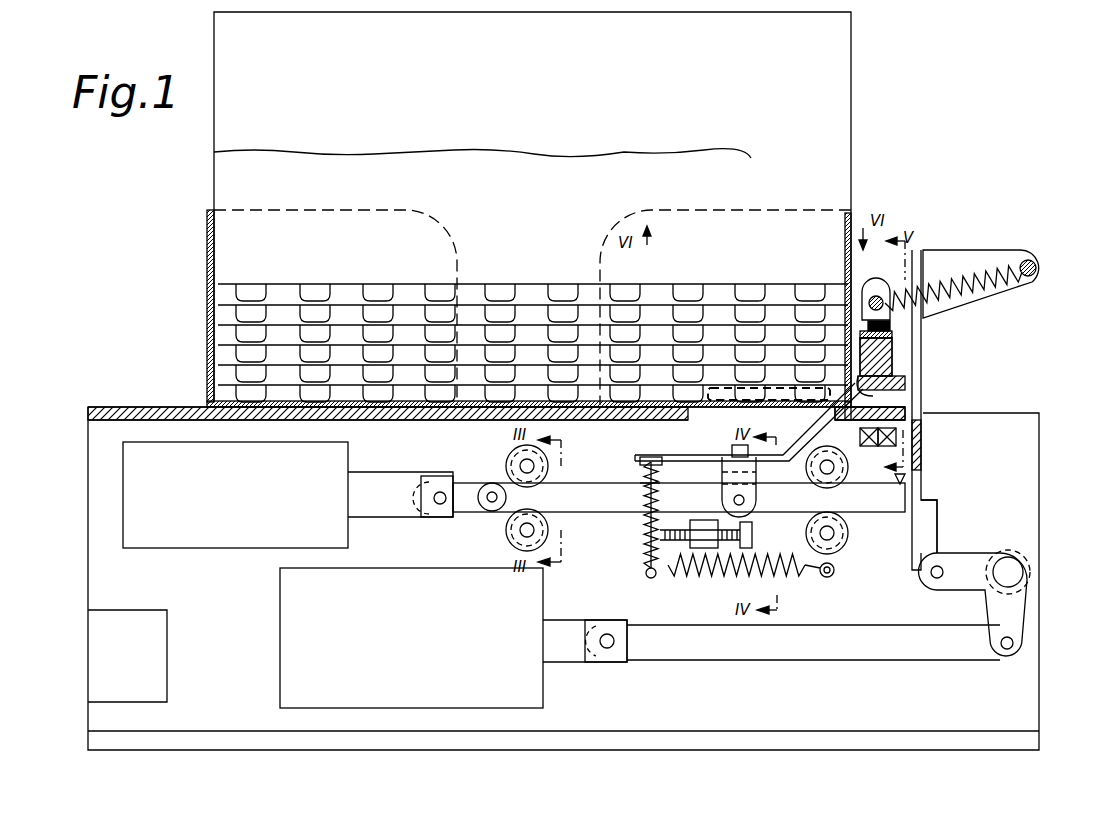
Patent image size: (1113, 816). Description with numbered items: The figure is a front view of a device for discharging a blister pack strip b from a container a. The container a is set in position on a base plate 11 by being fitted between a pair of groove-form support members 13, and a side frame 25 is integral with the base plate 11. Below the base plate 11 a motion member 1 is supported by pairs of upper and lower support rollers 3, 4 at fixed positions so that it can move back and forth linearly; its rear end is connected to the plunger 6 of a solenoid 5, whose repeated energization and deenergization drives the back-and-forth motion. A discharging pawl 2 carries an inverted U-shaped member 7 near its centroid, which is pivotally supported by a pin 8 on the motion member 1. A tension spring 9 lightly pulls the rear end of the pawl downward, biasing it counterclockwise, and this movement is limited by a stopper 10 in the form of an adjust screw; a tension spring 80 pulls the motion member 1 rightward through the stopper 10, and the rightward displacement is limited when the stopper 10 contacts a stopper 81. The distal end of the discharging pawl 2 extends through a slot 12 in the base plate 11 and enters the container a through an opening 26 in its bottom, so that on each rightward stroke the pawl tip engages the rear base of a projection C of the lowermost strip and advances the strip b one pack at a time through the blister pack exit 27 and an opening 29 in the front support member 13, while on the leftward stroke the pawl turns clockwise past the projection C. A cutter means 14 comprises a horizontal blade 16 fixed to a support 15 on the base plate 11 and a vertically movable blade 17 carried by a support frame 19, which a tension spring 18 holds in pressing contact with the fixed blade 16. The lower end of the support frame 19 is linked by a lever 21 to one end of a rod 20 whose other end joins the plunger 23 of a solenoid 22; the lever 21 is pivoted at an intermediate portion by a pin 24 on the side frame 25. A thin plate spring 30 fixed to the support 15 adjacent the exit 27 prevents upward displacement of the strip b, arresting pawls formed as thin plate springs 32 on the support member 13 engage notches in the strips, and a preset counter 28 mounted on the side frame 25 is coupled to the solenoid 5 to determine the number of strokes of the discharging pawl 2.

The container a is at (848, 146).
The blister pack strip b is at (470, 298).
The motion member 1 is at (586, 490).
The discharging pawl 2 is at (749, 437).
The upper and lower support rollers 3 is at (505, 472).
The upper and lower support rollers 4 is at (848, 472).
The solenoid 5 is at (239, 548).
The plunger 6 is at (380, 478).
The inverted U-shaped member 7 is at (725, 482).
The pin 8 is at (745, 500).
The tension spring 9 is at (642, 500).
The stopper 10 is at (647, 502).
The base plate 11 is at (468, 412).
The slot 12 is at (672, 497).
The support member 13 is at (210, 283).
The cutter means 14 is at (908, 383).
The support 15 is at (892, 348).
The horizontal blade 16 is at (912, 392).
The vertically movable blade 17 is at (922, 446).
The tension spring 18 is at (986, 268).
The support frame 19 is at (938, 516).
The rod 20 is at (863, 635).
The lever 21 is at (993, 606).
The solenoid 22 is at (283, 656).
The plunger 23 is at (570, 622).
The pin 24 is at (1009, 557).
The side frame 25 is at (1040, 488).
The opening 26 is at (767, 384).
The blister pack exit 27 is at (769, 384).
The preset counter 28 is at (158, 676).
The opening 29 is at (870, 410).
The thin plate spring 30 is at (895, 352).
The thin plate springs 32 is at (769, 384).
The tension spring 80 is at (712, 578).
The stopper 81 is at (675, 575).
The projection C is at (867, 440).